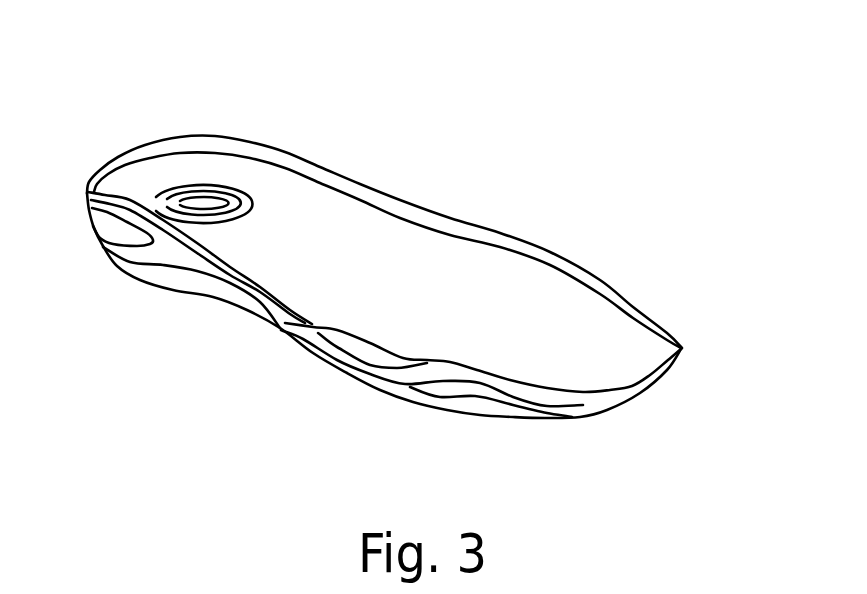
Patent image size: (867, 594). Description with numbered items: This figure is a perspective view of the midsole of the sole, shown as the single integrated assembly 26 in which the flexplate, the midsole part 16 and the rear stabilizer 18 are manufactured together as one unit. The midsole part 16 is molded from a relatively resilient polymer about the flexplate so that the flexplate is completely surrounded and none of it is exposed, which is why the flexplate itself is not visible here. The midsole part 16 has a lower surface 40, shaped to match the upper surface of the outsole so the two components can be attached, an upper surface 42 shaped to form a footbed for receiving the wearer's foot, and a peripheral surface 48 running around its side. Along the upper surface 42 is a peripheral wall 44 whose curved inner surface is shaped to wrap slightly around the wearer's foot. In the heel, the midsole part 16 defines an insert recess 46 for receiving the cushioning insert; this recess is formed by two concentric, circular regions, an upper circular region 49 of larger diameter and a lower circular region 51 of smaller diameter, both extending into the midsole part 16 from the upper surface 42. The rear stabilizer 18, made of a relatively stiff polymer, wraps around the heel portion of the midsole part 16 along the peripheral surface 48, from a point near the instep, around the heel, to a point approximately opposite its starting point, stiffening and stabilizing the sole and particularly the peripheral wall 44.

The midsole part 16 is at (570, 293).
The rear stabilizer 18 is at (163, 248).
The single integrated assembly 26 is at (478, 228).
The lower surface 40 is at (423, 401).
The upper surface 42 is at (375, 245).
The peripheral wall 44 is at (262, 146).
The insert recess 46 is at (188, 160).
The peripheral surface 48 is at (193, 281).
The upper circular region 49 is at (232, 190).
The lower circular region 51 is at (205, 206).